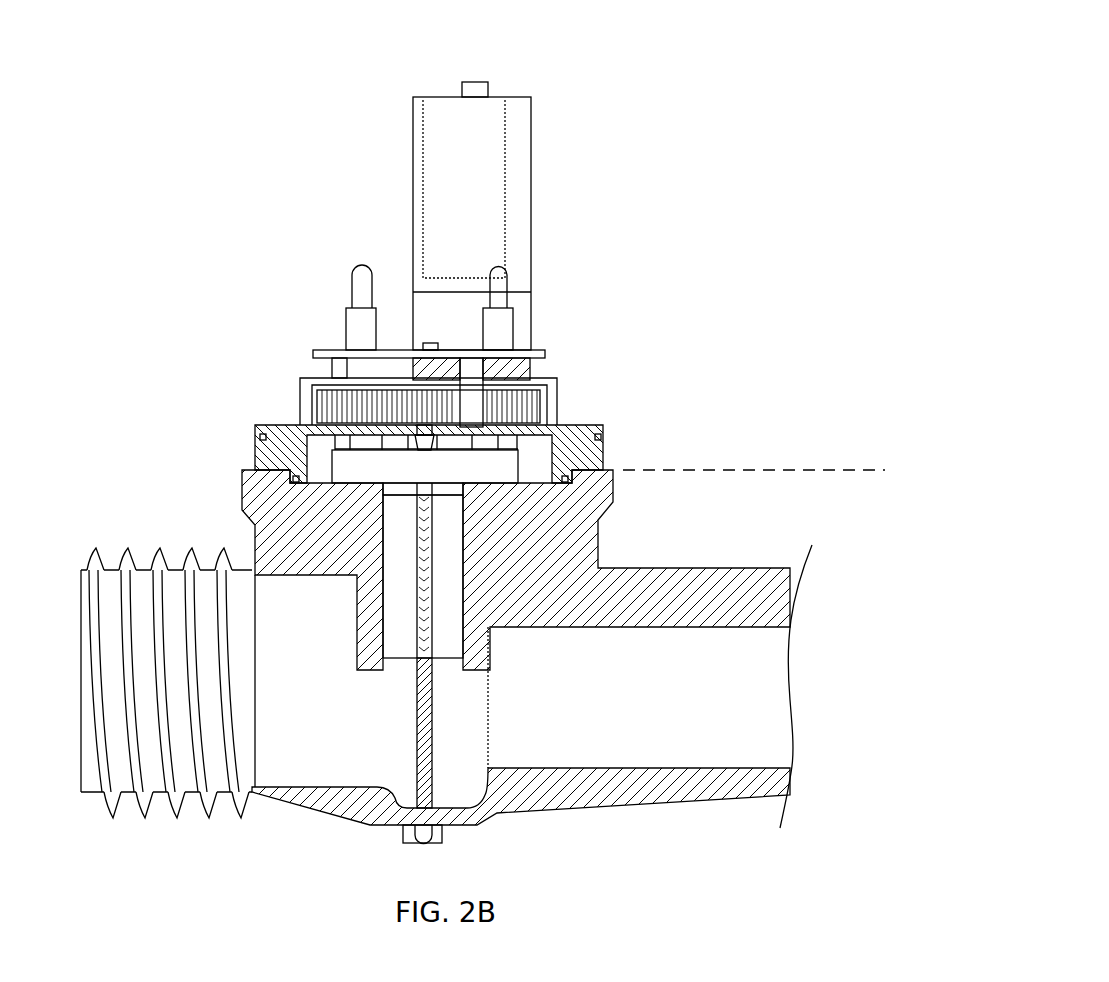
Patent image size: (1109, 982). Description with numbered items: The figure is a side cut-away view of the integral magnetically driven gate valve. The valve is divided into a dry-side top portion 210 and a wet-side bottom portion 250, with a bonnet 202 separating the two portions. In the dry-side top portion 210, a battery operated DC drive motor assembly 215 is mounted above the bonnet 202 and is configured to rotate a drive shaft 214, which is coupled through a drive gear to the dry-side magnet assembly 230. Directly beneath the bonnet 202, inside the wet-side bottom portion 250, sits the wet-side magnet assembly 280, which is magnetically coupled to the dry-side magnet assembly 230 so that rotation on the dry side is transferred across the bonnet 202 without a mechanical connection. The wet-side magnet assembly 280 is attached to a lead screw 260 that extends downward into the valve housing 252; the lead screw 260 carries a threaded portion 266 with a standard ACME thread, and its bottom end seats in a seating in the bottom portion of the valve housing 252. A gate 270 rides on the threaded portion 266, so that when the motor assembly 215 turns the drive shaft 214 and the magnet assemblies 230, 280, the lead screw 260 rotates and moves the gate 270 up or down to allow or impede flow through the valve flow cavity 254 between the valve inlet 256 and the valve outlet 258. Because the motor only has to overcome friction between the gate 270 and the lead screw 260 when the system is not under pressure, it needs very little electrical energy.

The dry-side top portion 210 is at (533, 98).
The drive shaft 214 is at (478, 372).
The drive motor assembly 215 is at (435, 412).
The dry-side magnet assembly 230 is at (333, 420).
The bonnet 202 is at (603, 457).
The wet-side magnet assembly 280 is at (345, 462).
The wet-side bottom portion 250 is at (882, 508).
The valve housing 252 is at (500, 818).
The valve flow cavity 254 is at (475, 780).
The valve inlet 256 is at (633, 717).
The valve outlet 258 is at (328, 698).
The lead screw 260 is at (428, 720).
The threaded portion 266 is at (428, 570).
The gate 270 is at (452, 540).